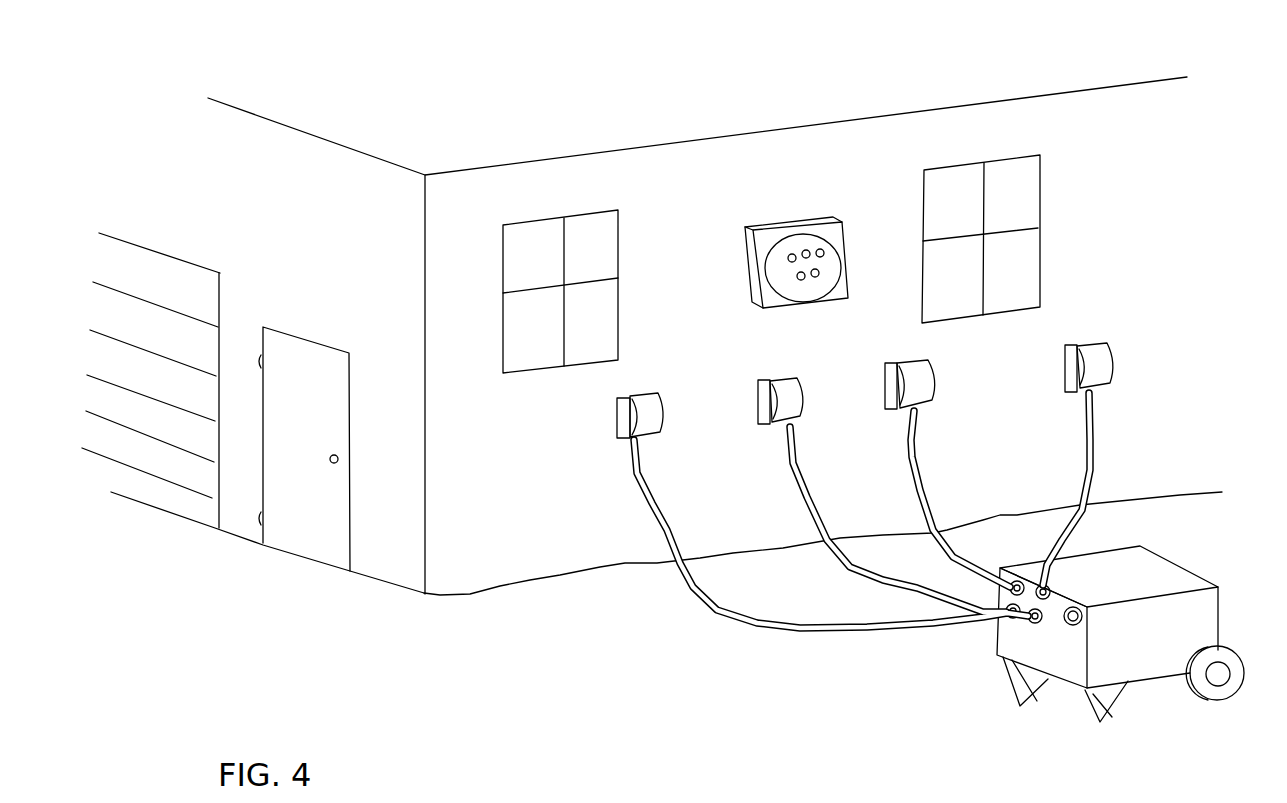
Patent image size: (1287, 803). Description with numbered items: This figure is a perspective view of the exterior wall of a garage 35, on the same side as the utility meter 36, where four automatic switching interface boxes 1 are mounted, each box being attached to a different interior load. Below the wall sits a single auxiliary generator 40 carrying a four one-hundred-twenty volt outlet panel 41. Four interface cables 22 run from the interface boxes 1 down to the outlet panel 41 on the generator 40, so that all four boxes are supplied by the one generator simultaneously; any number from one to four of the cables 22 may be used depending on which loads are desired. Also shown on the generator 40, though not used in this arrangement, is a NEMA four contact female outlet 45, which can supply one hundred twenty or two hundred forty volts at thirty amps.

The automatic switching interface box 1 is at (667, 380).
The interface cable 22 is at (677, 522).
The garage 35 is at (1095, 107).
The utility meter 36 is at (802, 212).
The generator 40 is at (1165, 568).
The four 120 volt outlet panel 41 is at (1047, 626).
The NEMA L14-30 four contact female outlet 45 is at (1070, 630).